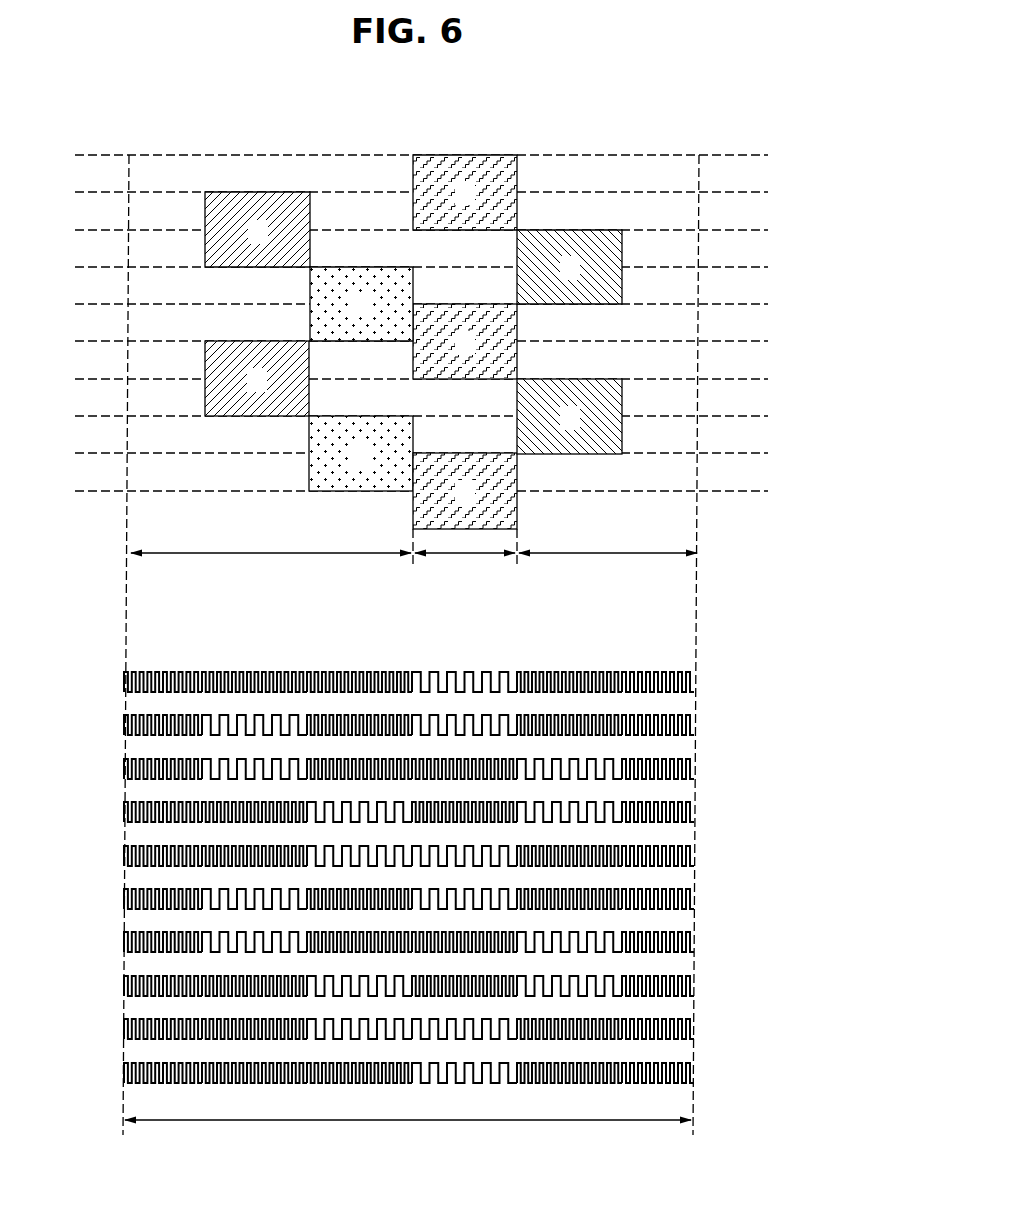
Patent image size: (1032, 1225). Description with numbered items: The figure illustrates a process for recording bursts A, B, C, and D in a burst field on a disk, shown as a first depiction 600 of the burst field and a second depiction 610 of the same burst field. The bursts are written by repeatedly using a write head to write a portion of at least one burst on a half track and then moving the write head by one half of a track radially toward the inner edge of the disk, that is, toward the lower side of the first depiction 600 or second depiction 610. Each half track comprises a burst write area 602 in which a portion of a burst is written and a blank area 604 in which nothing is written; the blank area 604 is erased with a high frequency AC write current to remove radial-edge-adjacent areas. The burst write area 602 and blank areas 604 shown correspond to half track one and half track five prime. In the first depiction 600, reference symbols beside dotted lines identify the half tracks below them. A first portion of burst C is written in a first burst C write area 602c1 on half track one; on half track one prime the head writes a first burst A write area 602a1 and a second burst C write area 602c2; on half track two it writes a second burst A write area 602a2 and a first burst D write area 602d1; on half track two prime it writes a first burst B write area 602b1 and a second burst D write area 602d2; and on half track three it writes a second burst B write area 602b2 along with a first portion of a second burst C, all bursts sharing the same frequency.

The first depiction 600 is at (408, 363).
The burst write area 602 is at (463, 584).
The blank area 604 is at (414, 596).
The first burst A write area 602a1 is at (217, 209).
The second burst A write area 602a2 is at (217, 251).
The first burst B write area 602b1 is at (322, 284).
The second burst B write area 602b2 is at (322, 325).
The first burst C write area 602c1 is at (425, 172).
The second burst C write area 602c2 is at (425, 215).
The first burst D write area 602d1 is at (610, 248).
The second burst D write area 602d2 is at (610, 291).
The second depiction 610 is at (713, 687).